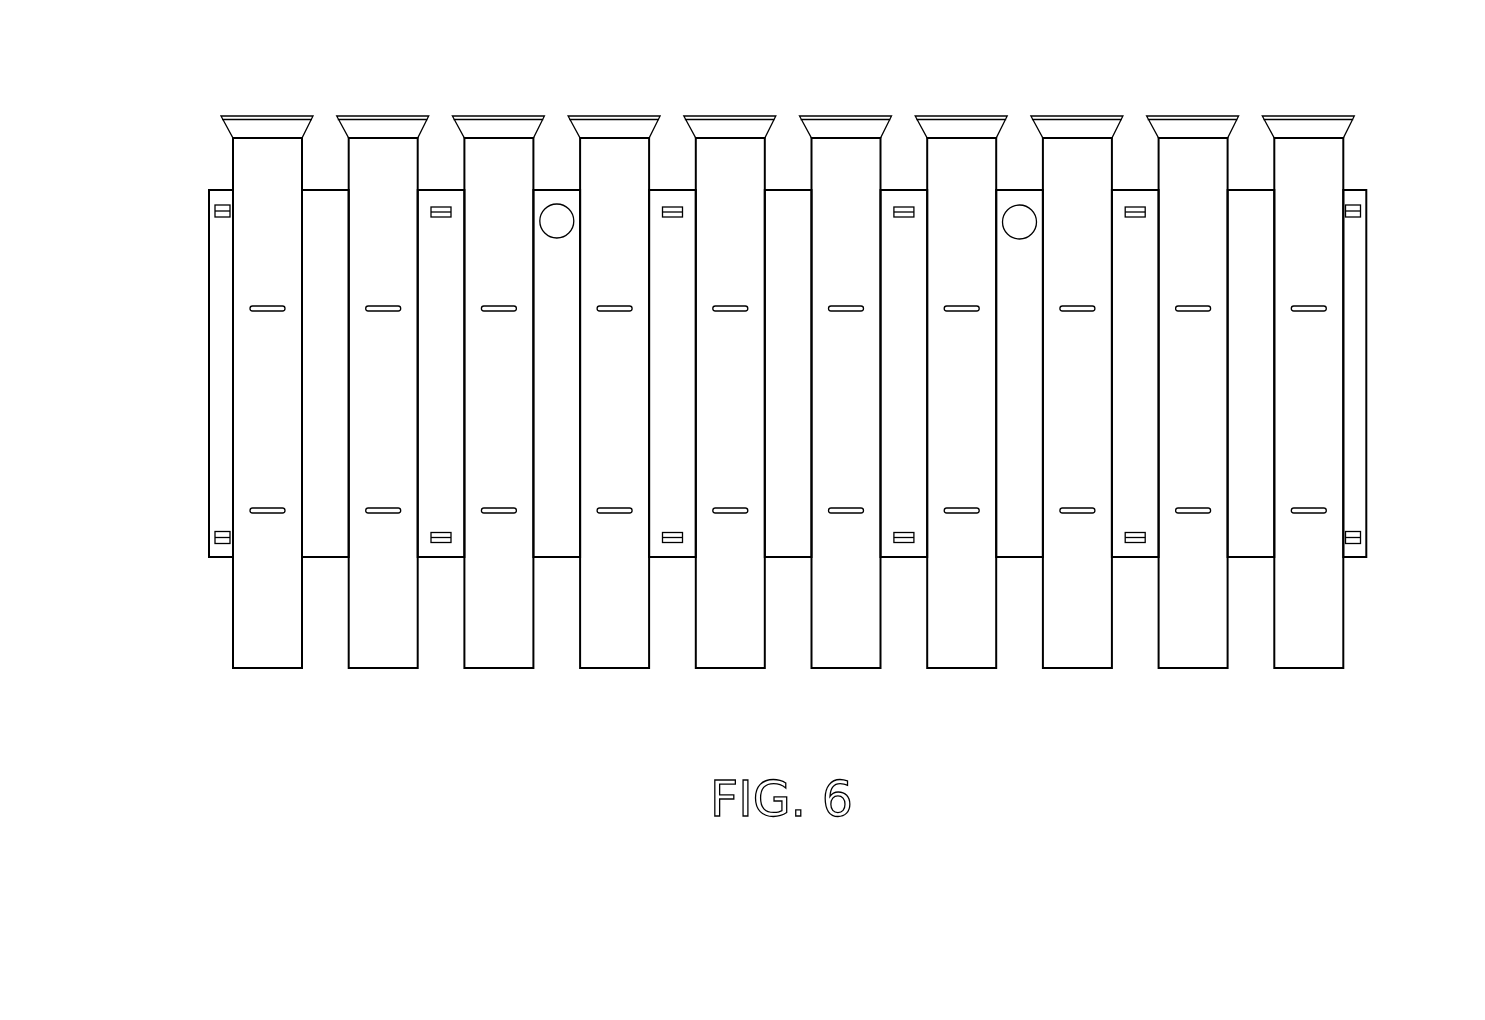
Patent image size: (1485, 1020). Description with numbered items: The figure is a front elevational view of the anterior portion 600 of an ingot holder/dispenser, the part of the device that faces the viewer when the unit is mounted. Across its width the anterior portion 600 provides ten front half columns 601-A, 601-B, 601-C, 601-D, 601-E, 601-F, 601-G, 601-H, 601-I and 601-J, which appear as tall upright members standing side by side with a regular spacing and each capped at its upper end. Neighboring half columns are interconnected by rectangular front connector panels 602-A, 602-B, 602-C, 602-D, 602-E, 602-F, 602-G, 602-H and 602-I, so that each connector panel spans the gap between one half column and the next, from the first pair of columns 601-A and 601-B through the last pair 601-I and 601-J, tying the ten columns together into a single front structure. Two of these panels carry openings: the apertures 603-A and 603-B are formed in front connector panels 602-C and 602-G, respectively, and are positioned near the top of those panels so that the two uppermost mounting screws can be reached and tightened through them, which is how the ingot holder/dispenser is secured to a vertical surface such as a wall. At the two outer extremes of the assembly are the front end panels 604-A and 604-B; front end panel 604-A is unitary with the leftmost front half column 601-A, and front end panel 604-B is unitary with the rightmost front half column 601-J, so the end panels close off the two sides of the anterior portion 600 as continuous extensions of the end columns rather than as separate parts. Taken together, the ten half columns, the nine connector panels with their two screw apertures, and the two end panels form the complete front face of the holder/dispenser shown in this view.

The anterior portion 600 is at (205, 92).
The front half column 601-A is at (252, 174).
The front half column 601-B is at (375, 175).
The front half column 601-C is at (491, 175).
The front half column 601-D is at (607, 175).
The front half column 601-E is at (722, 175).
The front half column 601-F is at (838, 175).
The front half column 601-G is at (954, 175).
The front half column 601-H is at (1069, 175).
The front half column 601-I is at (1185, 175).
The front half column 601-J is at (1301, 175).
The front connector panel 602-A is at (325, 548).
The front connector panel 602-B is at (441, 548).
The front connector panel 602-C is at (557, 548).
The front connector panel 602-D is at (672, 548).
The front connector panel 602-E is at (788, 548).
The front connector panel 602-F is at (904, 548).
The front connector panel 602-G is at (1020, 548).
The front connector panel 602-H is at (1135, 548).
The front connector panel 602-I is at (1251, 548).
The aperture 603-A is at (535, 222).
The aperture 603-B is at (1042, 223).
The front end panel 604-A is at (222, 380).
The front end panel 604-B is at (1352, 380).